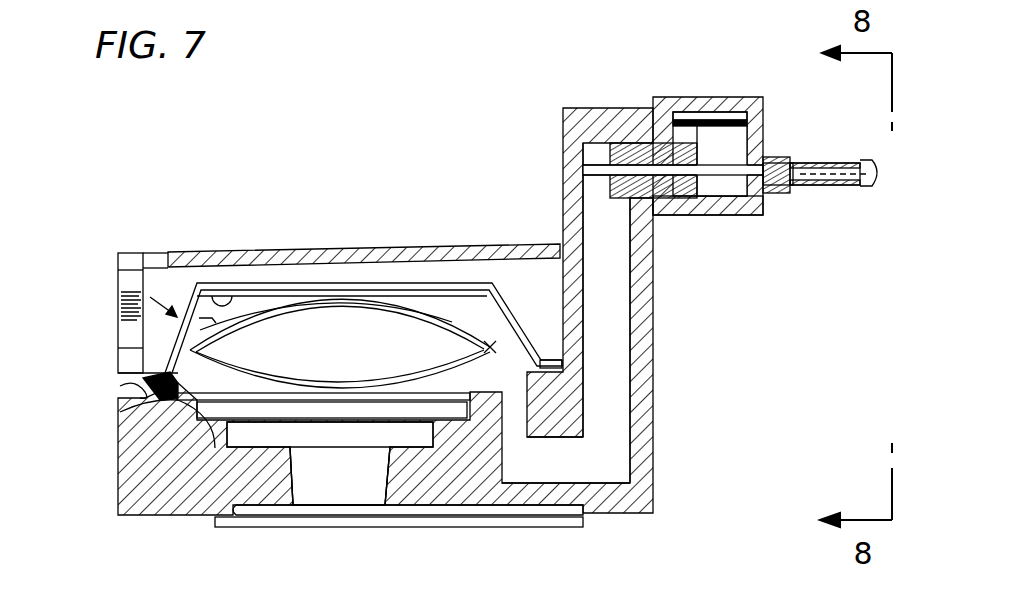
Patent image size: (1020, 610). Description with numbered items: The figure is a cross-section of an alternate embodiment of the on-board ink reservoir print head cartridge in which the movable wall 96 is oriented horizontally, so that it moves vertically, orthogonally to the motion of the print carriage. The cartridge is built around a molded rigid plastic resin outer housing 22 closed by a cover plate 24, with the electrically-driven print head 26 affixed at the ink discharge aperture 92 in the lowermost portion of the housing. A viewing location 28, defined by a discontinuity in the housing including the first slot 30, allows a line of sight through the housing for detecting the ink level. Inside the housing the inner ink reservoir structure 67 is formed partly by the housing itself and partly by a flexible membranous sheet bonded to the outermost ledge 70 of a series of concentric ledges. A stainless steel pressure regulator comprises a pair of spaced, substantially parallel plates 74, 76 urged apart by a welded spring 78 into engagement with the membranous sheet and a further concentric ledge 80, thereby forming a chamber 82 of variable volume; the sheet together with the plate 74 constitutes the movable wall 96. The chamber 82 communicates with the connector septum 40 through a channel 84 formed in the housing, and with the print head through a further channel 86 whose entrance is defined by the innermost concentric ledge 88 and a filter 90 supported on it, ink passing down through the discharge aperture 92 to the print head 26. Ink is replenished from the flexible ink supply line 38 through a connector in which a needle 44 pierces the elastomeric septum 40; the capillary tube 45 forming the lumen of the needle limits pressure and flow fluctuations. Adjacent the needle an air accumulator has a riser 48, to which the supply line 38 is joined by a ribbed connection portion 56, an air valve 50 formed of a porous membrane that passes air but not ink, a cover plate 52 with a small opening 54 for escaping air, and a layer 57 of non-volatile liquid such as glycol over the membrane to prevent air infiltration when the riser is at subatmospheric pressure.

The outer housing 22 is at (347, 289).
The cover plate 24 is at (520, 243).
The print head 26 is at (540, 527).
The viewing location 28 is at (98, 270).
The first slot 30 is at (130, 282).
The ink supply line 38 is at (830, 158).
The septum 40 is at (612, 143).
The needle 44 is at (596, 147).
The capillary tube 45 is at (722, 161).
The riser 48 is at (726, 216).
The air valve 50 is at (778, 150).
The cover plate 52 is at (735, 98).
The small opening 54 is at (705, 99).
The ribbed connection portion 56 is at (778, 193).
The layer of non-volatile liquid 57 is at (760, 112).
The inner ink reservoir structure 67 is at (136, 295).
The outermost ledge 70 is at (138, 393).
The plate 74 is at (213, 393).
The plate 76 is at (268, 384).
The spring 78 is at (452, 322).
The further concentric ledge 80 is at (130, 418).
The chamber 82 is at (213, 316).
The channel 84 is at (604, 398).
The further channel 86 is at (352, 483).
The innermost concentric ledge 88 is at (135, 444).
The filter 90 is at (272, 395).
The ink discharge aperture 92 is at (420, 507).
The movable wall 96 is at (375, 283).